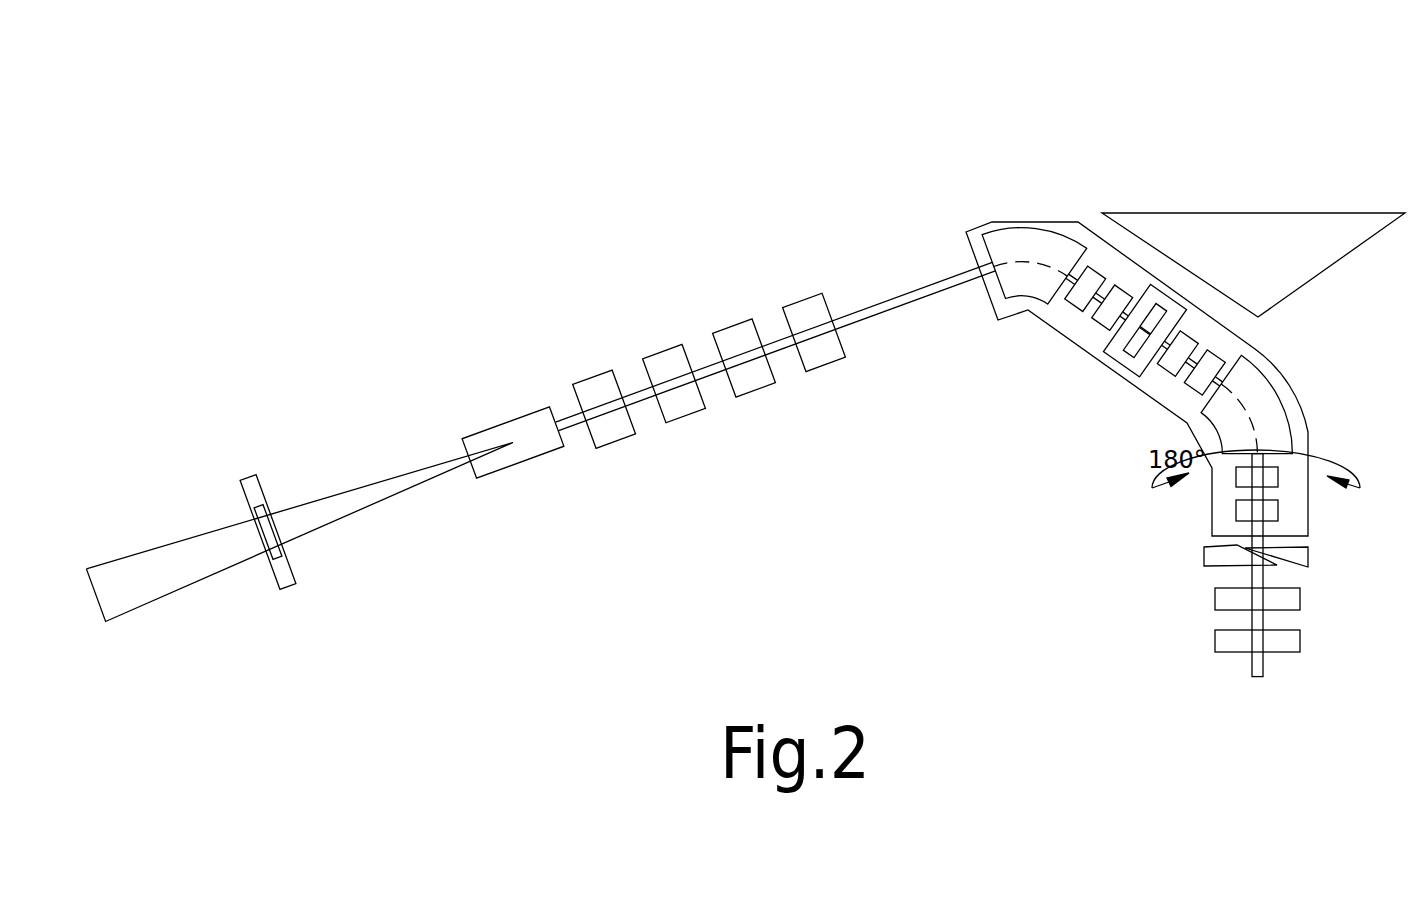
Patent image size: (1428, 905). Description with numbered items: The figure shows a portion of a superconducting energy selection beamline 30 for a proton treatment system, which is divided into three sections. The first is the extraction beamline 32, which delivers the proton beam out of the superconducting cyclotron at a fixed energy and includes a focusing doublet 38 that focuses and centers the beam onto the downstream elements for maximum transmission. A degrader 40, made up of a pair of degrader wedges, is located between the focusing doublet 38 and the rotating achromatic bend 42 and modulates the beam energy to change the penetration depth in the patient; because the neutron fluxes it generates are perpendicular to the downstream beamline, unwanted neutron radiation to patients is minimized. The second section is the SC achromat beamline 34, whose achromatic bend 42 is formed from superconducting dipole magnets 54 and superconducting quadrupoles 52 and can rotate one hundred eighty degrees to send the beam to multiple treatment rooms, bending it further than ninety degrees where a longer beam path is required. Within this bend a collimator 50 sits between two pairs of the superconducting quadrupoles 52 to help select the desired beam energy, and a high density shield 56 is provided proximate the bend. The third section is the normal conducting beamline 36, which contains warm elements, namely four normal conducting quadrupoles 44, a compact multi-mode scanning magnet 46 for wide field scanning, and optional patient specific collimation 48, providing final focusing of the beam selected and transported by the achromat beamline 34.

The superconducting energy selection beamline 30 is at (208, 138).
The extraction beamline 32 is at (1339, 642).
The SC achromat beamline 34 is at (1096, 439).
The normal conducting beamline 36 is at (702, 474).
The focusing doublet 38 is at (1194, 620).
The degrader 40 is at (1307, 546).
The achromatic bend 42 is at (1327, 451).
The normal conducting quadrupoles 44 is at (709, 290).
The compact multi-mode scanning magnet 46 is at (498, 356).
The patient specific collimation 48 is at (305, 596).
The collimator 50 is at (1182, 250).
The superconducting quadrupoles 52 is at (1080, 358).
The SC dipole magnets 54 is at (1162, 259).
The high density shield 56 is at (1253, 208).